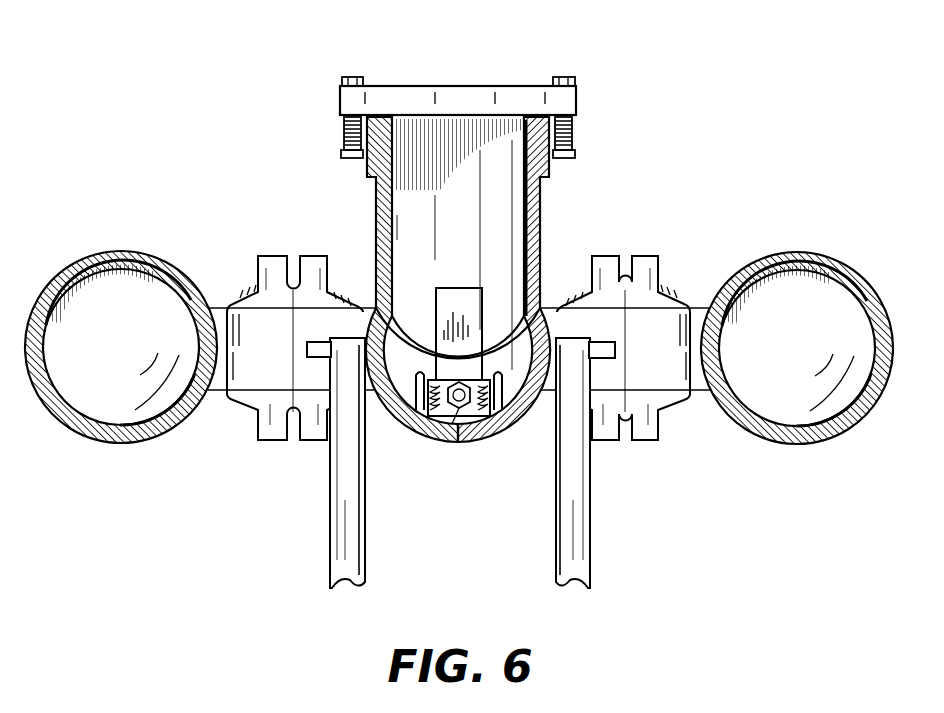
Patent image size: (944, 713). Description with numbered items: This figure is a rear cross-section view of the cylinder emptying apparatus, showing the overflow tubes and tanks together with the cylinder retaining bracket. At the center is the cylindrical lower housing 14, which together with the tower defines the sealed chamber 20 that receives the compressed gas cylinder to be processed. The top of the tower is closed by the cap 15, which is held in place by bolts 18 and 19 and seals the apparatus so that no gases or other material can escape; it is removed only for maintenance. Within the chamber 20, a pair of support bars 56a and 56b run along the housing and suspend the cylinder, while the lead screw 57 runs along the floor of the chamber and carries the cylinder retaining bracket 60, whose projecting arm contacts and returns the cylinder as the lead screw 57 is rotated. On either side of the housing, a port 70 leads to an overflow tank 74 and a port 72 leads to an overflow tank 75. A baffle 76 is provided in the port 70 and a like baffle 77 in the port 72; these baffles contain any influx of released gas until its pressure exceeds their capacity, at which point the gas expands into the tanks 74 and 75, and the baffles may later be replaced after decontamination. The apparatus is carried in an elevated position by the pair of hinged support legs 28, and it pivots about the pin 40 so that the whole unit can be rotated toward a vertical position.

The lower housing 14 is at (427, 440).
The cap 15 is at (528, 88).
The bolt 18 is at (353, 75).
The bolt 19 is at (565, 76).
The chamber 20 is at (436, 170).
The support legs 28 is at (338, 467).
The pin 40 is at (320, 340).
The support bar 56a is at (420, 375).
The support bar 56b is at (492, 375).
The lead screw 57 is at (445, 440).
The cylinder retaining bracket 60 is at (467, 298).
The port 70 is at (371, 262).
The port 72 is at (546, 262).
The overflow tank 74 is at (100, 358).
The overflow tank 75 is at (775, 353).
The baffle 76 is at (290, 333).
The baffle 77 is at (627, 332).